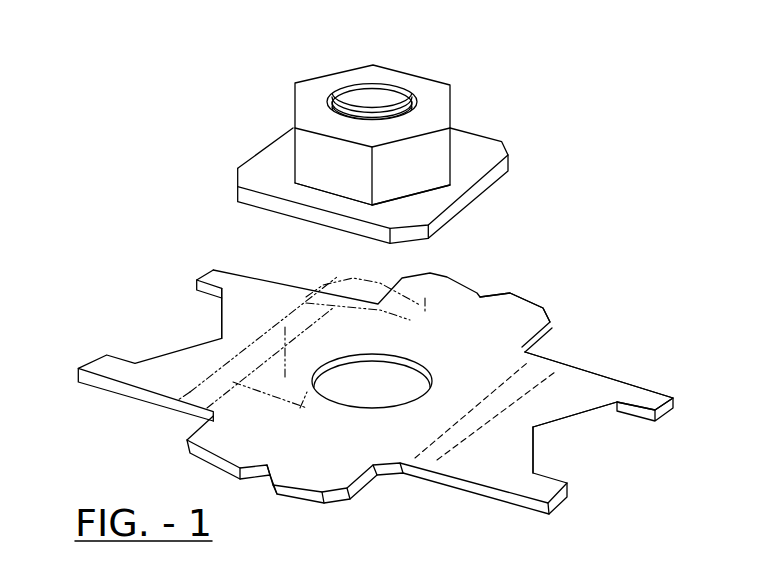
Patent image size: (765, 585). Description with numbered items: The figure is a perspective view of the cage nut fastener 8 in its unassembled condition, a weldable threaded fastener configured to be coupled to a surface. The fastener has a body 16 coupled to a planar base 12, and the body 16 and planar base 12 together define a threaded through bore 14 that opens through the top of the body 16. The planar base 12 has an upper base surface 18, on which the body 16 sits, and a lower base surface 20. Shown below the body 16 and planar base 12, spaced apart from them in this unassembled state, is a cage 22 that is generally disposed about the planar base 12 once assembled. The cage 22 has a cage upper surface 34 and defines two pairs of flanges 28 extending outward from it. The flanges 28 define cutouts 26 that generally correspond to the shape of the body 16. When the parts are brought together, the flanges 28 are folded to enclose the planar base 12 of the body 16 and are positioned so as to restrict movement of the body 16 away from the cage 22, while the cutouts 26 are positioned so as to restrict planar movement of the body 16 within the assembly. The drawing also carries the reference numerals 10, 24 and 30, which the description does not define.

The cage nut fastener 8 is at (140, 226).
The nut 10 is at (450, 100).
The planar base 12 is at (511, 154).
The threaded through bore 14 is at (377, 87).
The body 16 is at (453, 127).
The upper base surface 18 is at (265, 178).
The lower base surface 20 is at (268, 212).
The cage 22 is at (472, 364).
The aperture center 24 is at (366, 391).
The cutouts 26 is at (221, 327).
The flanges 28 is at (105, 363).
The plate body 30 is at (213, 448).
The cage upper surface 34 is at (514, 318).